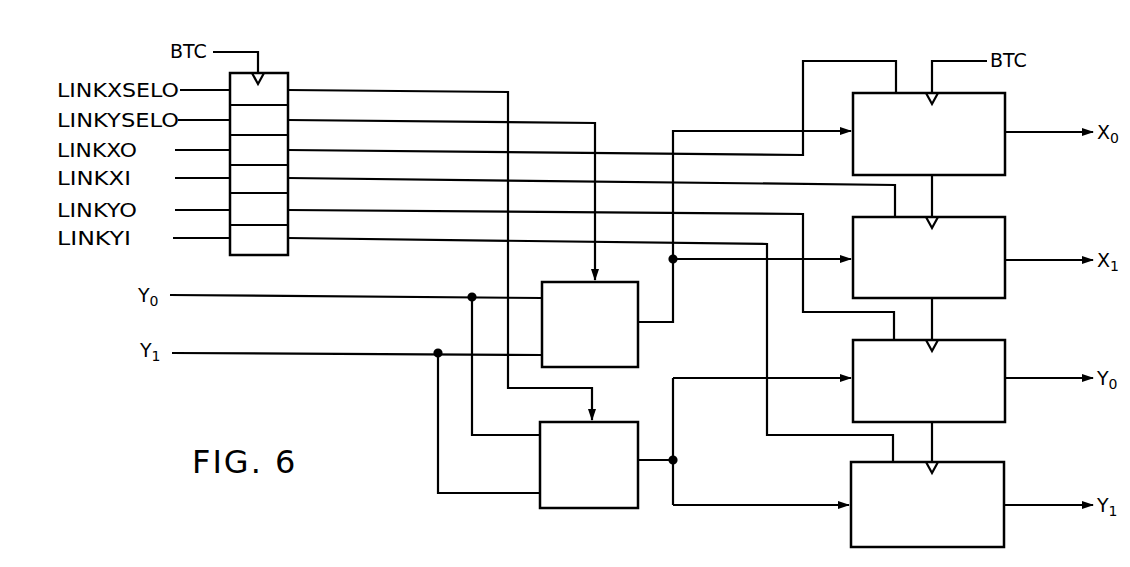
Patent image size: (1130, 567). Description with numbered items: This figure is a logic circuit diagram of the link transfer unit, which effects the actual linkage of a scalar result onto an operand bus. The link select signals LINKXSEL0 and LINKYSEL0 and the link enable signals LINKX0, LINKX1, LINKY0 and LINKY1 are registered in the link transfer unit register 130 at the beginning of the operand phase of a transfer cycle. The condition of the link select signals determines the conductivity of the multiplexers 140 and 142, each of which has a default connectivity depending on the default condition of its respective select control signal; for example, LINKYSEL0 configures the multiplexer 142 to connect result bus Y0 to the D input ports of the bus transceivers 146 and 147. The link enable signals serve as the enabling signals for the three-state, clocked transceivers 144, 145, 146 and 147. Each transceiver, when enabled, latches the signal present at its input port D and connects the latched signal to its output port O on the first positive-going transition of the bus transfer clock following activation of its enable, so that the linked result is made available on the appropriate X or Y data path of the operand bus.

The link transfer unit register 130 is at (288, 250).
The multiplexer 140 is at (614, 282).
The multiplexer 142 is at (614, 422).
The three-state clocked transceiver 144 is at (1005, 113).
The three-state clocked transceiver 145 is at (1005, 229).
The bus transceiver 146 is at (1005, 352).
The bus transceiver 147 is at (1004, 476).